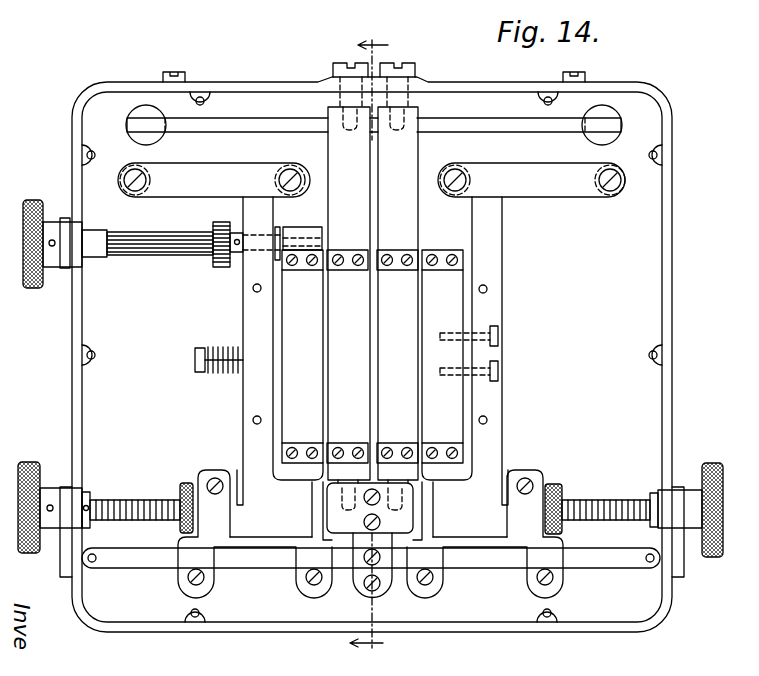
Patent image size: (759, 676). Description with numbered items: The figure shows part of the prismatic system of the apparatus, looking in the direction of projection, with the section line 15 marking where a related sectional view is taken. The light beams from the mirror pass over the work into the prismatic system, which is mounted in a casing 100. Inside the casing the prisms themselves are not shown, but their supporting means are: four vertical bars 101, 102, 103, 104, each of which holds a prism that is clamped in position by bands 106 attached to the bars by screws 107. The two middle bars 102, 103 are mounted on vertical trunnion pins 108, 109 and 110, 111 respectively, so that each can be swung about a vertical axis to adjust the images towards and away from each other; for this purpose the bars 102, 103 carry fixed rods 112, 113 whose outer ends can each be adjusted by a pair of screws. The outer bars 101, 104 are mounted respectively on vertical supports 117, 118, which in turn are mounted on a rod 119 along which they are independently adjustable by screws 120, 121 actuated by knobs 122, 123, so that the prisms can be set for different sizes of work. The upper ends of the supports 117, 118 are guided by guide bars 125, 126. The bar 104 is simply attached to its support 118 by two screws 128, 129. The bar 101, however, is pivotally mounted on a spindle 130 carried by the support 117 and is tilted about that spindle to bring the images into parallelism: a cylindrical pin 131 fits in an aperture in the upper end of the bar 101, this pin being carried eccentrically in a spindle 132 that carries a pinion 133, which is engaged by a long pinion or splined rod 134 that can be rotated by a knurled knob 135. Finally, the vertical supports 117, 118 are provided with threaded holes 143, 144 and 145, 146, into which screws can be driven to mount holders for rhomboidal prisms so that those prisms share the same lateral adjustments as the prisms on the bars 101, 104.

The section line 15 is at (371, 345).
The casing 100 is at (115, 85).
The vertical bar 101 is at (307, 313).
The vertical bar 102 is at (337, 147).
The vertical bar 103 is at (395, 152).
The vertical bar 104 is at (452, 277).
The bands 106 is at (442, 250).
The screws 107 is at (428, 265).
The vertical trunnion pin 108 is at (343, 118).
The vertical trunnion pin 109 is at (333, 500).
The vertical trunnion pin 110 is at (407, 100).
The vertical trunnion pin 111 is at (413, 493).
The fixed rod 112 is at (237, 125).
The fixed rod 113 is at (500, 127).
The vertical support 117 is at (257, 390).
The vertical support 118 is at (485, 313).
The rod 119 is at (590, 558).
The screw 120 is at (145, 500).
The screw 121 is at (600, 498).
The knob 122 is at (33, 458).
The knob 123 is at (712, 460).
The guide bar 125 is at (193, 180).
The guide bar 126 is at (545, 178).
The screw 128 is at (498, 342).
The screw 129 is at (498, 372).
The spindle 130 is at (195, 358).
The cylindrical pin 131 is at (308, 238).
The spindle 132 is at (273, 232).
The pinion 133 is at (220, 230).
The splined rod 134 is at (147, 242).
The knurled knob 135 is at (32, 200).
The threaded hole 143 is at (253, 290).
The threaded hole 144 is at (253, 422).
The threaded hole 145 is at (487, 289).
The threaded hole 146 is at (487, 420).